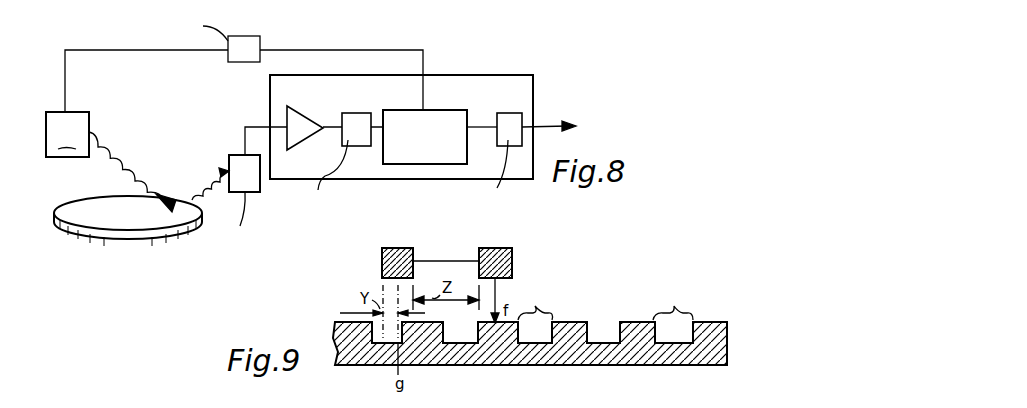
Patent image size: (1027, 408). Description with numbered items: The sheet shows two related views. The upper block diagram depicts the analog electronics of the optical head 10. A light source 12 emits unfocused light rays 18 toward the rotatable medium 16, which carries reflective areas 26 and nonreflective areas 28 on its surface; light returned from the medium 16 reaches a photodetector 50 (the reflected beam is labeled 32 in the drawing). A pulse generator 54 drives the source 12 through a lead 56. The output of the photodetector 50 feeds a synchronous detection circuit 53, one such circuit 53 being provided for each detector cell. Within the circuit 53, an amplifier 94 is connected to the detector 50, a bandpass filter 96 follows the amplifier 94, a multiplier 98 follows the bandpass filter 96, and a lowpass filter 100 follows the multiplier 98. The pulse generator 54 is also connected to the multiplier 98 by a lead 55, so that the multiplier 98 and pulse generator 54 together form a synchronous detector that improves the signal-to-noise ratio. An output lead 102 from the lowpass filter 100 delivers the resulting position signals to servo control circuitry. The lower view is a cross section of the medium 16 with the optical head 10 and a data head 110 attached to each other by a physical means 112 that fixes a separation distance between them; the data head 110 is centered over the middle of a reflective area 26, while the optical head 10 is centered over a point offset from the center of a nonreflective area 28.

In FIG. 8, the light source 12 is at (67, 134).
In FIG. 8, the medium 16 is at (118, 196).
In FIG. 9, the medium 16 is at (727, 342).
In FIG. 8, the light rays 18 is at (132, 172).
In FIG. 8, the reflected light beam 32 is at (199, 183).
In FIG. 8, the photodetector 50 is at (231, 156).
In FIG. 8, the synchronous detection circuit 53 is at (461, 75).
In FIG. 8, the pulse generator 54 is at (238, 62).
In FIG. 8, the lead 55 is at (423, 58).
In FIG. 8, the lead 56 is at (65, 83).
In FIG. 8, the amplifier 94 is at (310, 102).
In FIG. 8, the bandpass filter 96 is at (345, 113).
In FIG. 8, the multiplier 98 is at (440, 110).
In FIG. 8, the lowpass filter 100 is at (516, 102).
In FIG. 8, the output lead 102 is at (541, 121).
In FIG. 9, the optical head 10 is at (382, 266).
In FIG. 9, the data head 110 is at (512, 271).
In FIG. 9, the physical means 112 is at (445, 261).
In FIG. 9, the reflective area 26 is at (605, 305).
In FIG. 9, the nonreflective area 28 is at (386, 343).